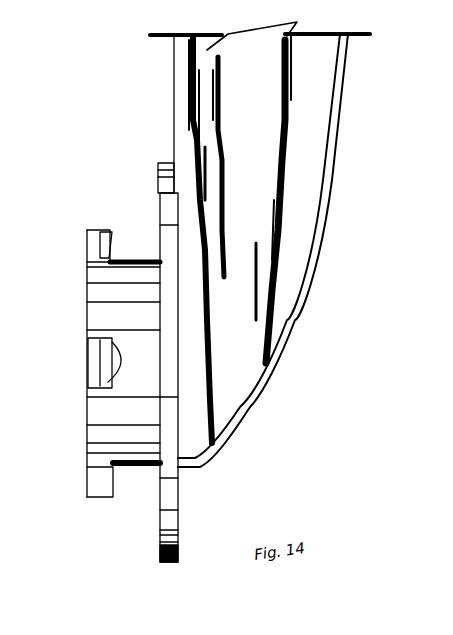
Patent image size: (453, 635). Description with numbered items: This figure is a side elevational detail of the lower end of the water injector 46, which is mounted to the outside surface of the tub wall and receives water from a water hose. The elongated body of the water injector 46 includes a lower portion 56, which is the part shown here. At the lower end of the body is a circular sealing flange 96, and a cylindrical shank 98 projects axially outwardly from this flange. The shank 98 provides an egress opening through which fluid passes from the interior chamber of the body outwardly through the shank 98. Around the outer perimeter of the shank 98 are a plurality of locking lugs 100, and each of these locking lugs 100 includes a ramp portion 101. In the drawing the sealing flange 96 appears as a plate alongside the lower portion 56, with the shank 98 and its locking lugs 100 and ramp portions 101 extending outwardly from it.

The water injector 46 is at (344, 154).
The lower portion 56 is at (311, 176).
The circular sealing flange 96 is at (166, 186).
The cylindrical shank 98 is at (118, 438).
The locking lugs 100 is at (87, 230).
The ramp portion 101 is at (108, 246).